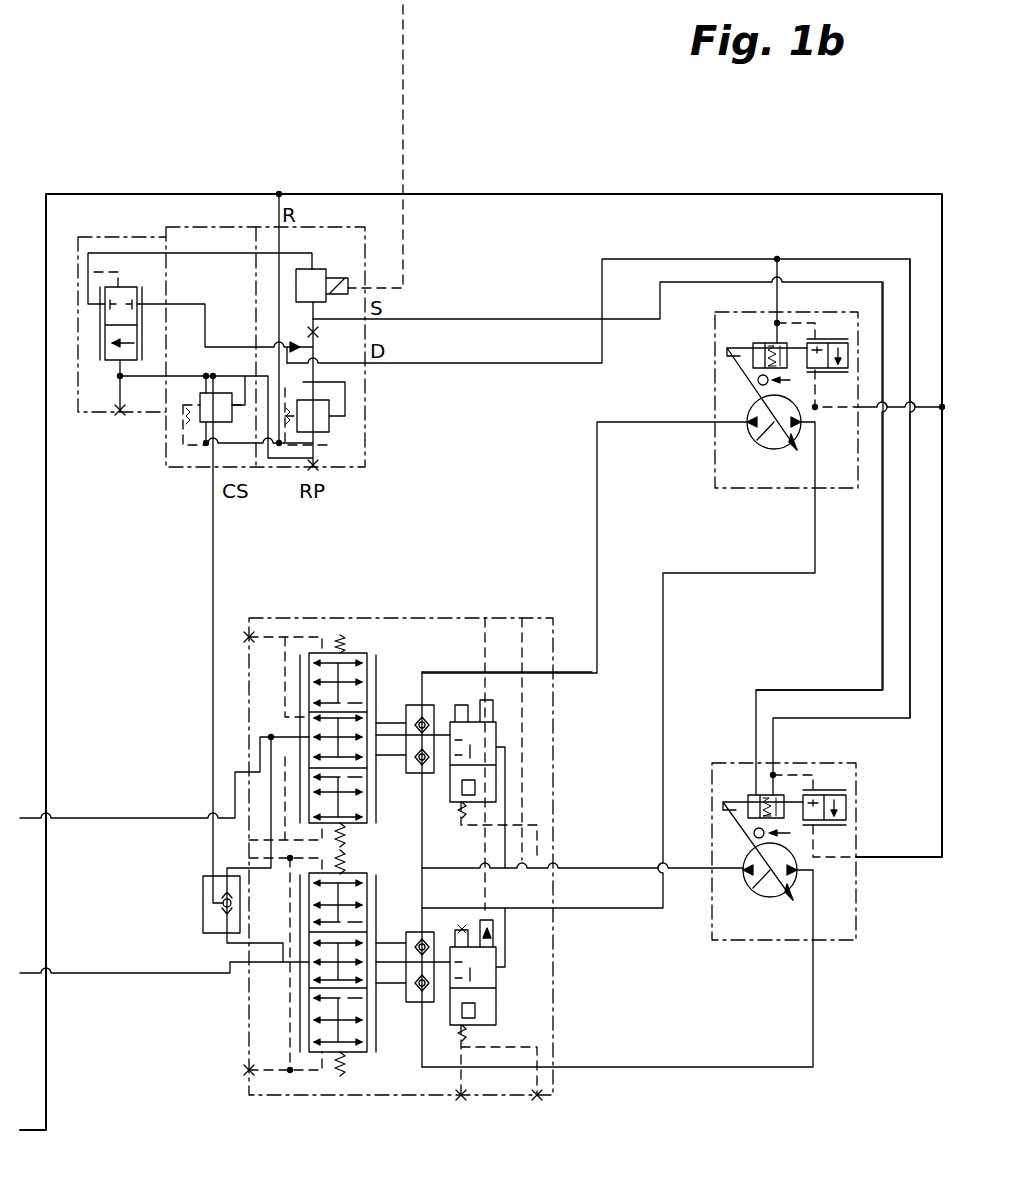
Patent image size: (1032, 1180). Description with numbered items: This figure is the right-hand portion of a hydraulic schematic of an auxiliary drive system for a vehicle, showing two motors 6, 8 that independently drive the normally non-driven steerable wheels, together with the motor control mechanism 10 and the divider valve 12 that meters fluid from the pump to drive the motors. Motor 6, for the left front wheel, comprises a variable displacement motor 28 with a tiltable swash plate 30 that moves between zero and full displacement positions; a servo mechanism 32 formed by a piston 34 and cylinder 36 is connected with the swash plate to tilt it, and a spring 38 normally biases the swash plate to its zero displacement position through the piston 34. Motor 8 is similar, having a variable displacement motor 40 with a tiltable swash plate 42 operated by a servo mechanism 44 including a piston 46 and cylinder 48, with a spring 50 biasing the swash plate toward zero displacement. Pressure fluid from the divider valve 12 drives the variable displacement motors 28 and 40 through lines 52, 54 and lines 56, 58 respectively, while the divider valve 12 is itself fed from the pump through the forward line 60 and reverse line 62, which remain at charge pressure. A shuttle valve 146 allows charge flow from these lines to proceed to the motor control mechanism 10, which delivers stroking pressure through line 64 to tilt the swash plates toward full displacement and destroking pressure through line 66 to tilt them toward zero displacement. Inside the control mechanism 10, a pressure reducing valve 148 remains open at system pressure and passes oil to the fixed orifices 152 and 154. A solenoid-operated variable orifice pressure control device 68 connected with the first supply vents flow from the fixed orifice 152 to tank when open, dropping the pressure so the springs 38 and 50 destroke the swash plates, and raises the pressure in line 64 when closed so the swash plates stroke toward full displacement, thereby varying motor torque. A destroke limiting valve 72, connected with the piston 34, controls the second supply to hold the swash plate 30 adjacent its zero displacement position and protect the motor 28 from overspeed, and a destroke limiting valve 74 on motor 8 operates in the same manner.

The motor 6 is at (715, 470).
The motor 8 is at (712, 922).
The motor control mechanism 10 is at (180, 482).
The divider valve 12 is at (246, 1008).
The variable displacement motor 28 is at (776, 464).
The tiltable swash plate 30 is at (759, 409).
The servo mechanism 32 is at (753, 342).
The piston 34 is at (746, 356).
The cylinder 36 is at (754, 380).
The spring 38 is at (781, 344).
The variable displacement motor 40 is at (777, 916).
The tiltable swash plate 42 is at (758, 864).
The servo mechanism 44 is at (748, 792).
The piston 46 is at (744, 810).
The cylinder 48 is at (754, 842).
The spring 50 is at (776, 788).
The line 52 is at (594, 533).
The line 54 is at (663, 660).
The line 56 is at (598, 868).
The line 58 is at (630, 1066).
The forward line 60 is at (118, 818).
The reverse line 62 is at (118, 974).
The line 64 is at (504, 318).
The line 66 is at (526, 364).
The variable orifice pressure control device 68 is at (317, 270).
The destroke limiting valve 72 is at (826, 344).
The destroke limiting valve 74 is at (834, 786).
The shuttle valve 146 is at (204, 912).
The pressure reducing valve 148 is at (196, 414).
The fixed orifice 152 is at (317, 332).
The fixed orifice 154 is at (288, 345).